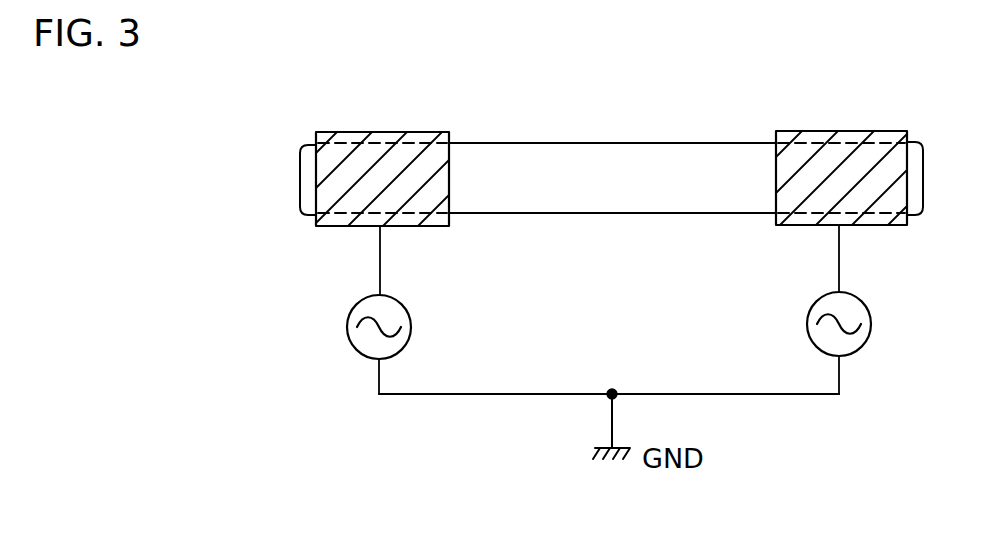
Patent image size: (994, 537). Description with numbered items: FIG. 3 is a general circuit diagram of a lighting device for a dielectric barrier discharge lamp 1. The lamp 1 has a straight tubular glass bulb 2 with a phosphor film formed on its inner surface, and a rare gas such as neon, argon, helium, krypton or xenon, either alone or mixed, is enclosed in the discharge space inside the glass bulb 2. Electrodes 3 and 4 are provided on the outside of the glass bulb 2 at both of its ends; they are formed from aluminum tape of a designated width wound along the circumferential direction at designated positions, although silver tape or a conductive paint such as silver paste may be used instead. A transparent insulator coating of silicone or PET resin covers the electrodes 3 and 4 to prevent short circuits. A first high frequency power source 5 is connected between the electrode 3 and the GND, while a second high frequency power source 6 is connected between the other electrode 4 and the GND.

The dielectric barrier discharge lamp 1 is at (558, 142).
The glass bulb 2 is at (665, 152).
The electrode 3 is at (388, 132).
The electrode 4 is at (832, 131).
The first high frequency power source 5 is at (407, 312).
The second high frequency power source 6 is at (863, 303).